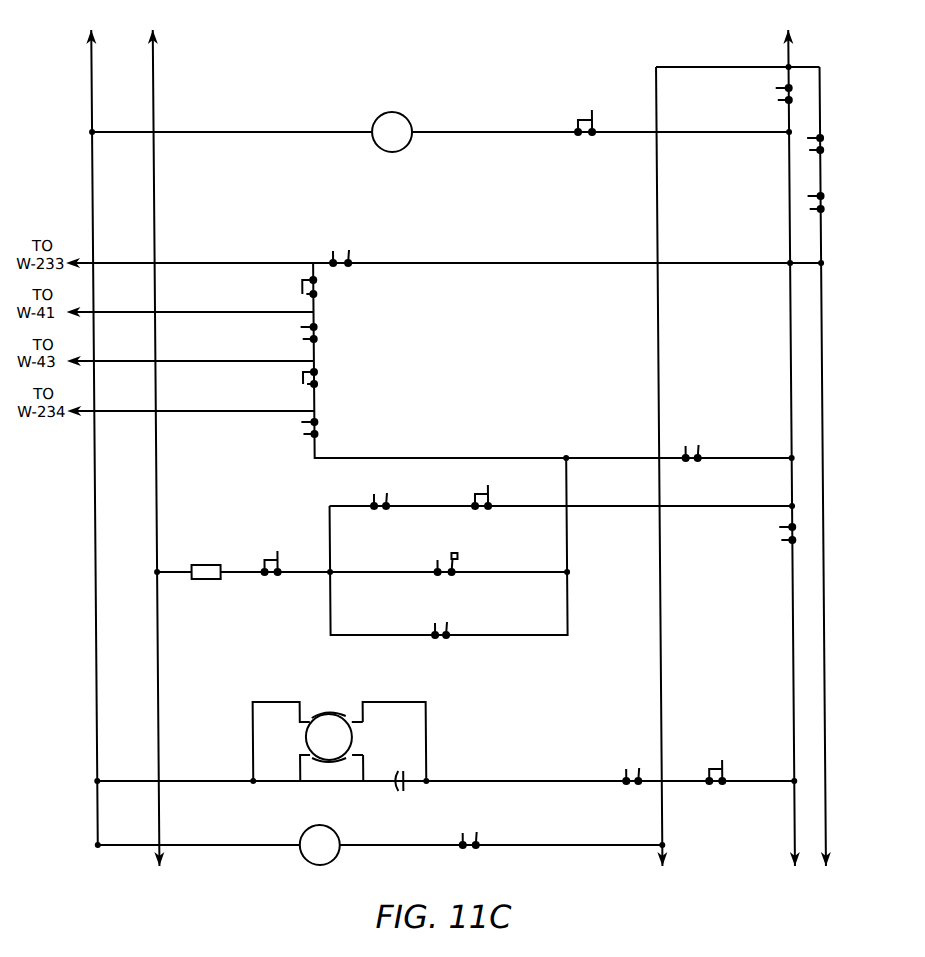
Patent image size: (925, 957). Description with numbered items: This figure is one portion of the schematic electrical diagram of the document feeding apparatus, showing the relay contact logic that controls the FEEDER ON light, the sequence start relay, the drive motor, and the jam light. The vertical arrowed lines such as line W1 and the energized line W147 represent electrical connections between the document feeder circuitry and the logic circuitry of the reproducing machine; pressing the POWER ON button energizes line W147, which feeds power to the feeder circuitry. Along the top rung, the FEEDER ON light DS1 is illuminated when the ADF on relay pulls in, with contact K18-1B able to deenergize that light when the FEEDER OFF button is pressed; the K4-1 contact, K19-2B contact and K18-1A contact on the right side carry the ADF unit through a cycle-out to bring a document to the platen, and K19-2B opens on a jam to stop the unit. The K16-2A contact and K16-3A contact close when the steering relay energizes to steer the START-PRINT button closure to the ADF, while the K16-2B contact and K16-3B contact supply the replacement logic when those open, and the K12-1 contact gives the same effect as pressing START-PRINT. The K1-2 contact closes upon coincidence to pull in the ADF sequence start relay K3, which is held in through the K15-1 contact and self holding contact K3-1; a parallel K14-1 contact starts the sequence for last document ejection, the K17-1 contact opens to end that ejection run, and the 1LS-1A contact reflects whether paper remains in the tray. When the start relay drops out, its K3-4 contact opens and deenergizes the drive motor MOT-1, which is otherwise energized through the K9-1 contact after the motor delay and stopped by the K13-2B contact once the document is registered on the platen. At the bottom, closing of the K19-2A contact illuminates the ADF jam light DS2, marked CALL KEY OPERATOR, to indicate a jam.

The line W1 is at (91, 86).
The energized line W-147 W147 is at (790, 52).
The FEEDER ON light DS1 is at (392, 122).
The ADF jam light DS2 is at (319, 836).
The K18-1B contact K18-1B is at (587, 113).
The K4-1 contact K4-1 is at (756, 97).
The K19-2B contact K19-2B is at (844, 145).
The K18-1A contact K18-1A is at (845, 204).
The K16-2A contact K16-2A is at (350, 247).
The K16-2B contact K16-2B is at (339, 287).
The K12-1 contact K12-1 is at (334, 333).
The K16-3B contact K16-3B is at (340, 379).
The K16-3A contact K16-3A is at (339, 429).
The K1-2 contact K1-2 is at (692, 440).
The K3-1 self holding contact K3-1 is at (375, 487).
The K15-1 contact K15-1 is at (487, 487).
The K3-4 contact K3-4 is at (758, 533).
The ADF sequence start relay K3 is at (205, 562).
The K17-1 contact K17-1 is at (275, 554).
The 1LS-1A contact 1LS-1A is at (446, 550).
The K14-1 contact K14-1 is at (438, 617).
The drive motor MOT-1 is at (339, 737).
The K9-1 contact K9-1 is at (634, 763).
The K13-2B contact K13-2B is at (722, 760).
The K19-2A contact K19-2A is at (471, 829).